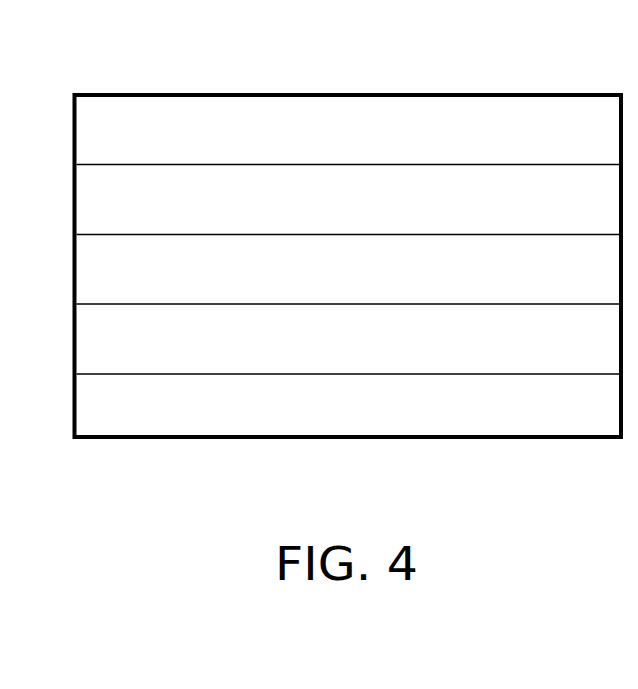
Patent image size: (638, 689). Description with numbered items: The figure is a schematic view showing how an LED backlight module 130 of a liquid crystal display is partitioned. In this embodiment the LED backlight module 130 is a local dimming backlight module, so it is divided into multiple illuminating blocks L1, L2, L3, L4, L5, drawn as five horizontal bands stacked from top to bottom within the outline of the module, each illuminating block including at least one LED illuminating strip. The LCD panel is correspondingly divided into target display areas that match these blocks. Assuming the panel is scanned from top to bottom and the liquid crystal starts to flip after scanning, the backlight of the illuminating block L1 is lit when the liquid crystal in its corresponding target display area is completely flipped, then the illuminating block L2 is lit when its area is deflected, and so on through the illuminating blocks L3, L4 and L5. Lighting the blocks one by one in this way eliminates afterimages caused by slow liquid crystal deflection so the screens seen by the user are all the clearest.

The LED backlight module 130 is at (348, 218).
The illuminating block L1 is at (348, 131).
The illuminating block L2 is at (348, 200).
The illuminating block L3 is at (348, 270).
The illuminating block L4 is at (348, 339).
The illuminating block L5 is at (348, 404).